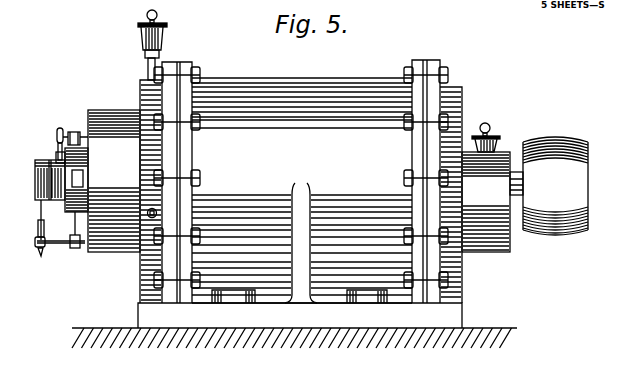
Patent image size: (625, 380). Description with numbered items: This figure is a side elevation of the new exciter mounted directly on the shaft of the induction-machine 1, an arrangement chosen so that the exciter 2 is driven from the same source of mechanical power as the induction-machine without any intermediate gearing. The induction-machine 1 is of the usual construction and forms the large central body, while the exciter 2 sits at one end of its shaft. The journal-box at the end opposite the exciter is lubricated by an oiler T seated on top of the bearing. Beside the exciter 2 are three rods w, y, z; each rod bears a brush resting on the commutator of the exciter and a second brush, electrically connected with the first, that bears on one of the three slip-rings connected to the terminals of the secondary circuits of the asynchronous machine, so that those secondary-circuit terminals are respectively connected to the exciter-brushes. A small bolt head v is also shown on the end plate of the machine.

The induction-machine 1 is at (302, 179).
The exciter 2 is at (114, 171).
The oiler T is at (157, 45).
The rod w is at (62, 128).
The rod y is at (57, 155).
The rod z is at (60, 237).
The bolt head v is at (158, 214).